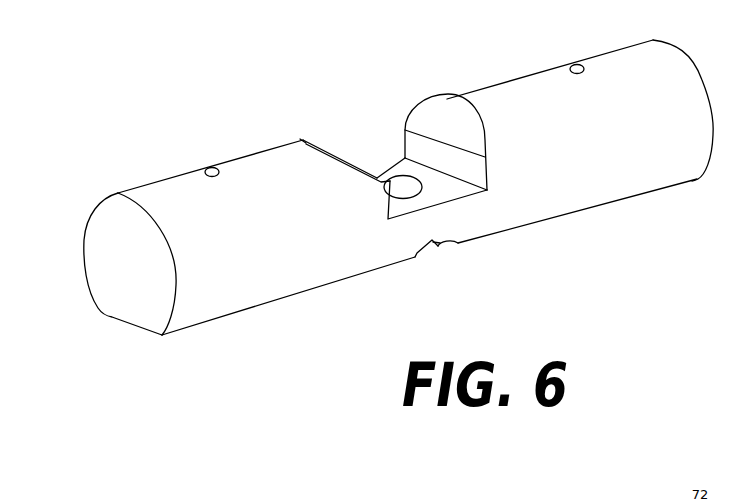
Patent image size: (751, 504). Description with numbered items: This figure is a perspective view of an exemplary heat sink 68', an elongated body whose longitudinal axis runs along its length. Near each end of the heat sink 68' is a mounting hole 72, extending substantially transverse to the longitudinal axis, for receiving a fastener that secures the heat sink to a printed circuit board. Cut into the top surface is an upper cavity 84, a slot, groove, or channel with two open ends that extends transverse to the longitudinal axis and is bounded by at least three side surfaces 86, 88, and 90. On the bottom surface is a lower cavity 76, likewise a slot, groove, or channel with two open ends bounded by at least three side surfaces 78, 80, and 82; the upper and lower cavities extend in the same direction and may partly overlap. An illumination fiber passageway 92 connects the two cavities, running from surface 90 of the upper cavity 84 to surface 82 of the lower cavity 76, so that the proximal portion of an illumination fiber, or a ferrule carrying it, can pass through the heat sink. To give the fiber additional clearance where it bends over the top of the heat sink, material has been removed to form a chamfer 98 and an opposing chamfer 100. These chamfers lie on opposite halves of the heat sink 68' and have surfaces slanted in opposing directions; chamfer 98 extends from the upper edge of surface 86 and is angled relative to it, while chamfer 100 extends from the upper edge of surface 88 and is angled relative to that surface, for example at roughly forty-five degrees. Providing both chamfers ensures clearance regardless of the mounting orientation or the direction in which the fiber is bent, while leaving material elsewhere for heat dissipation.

The mounting holes 72 is at (577, 65).
The heat sink 68' is at (268, 114).
The chamfer 98 is at (335, 155).
The upper cavity 84 is at (376, 146).
The chamfer 100 is at (432, 116).
The side surface 88 is at (477, 170).
The side surface 90 is at (487, 190).
The side surface 86 is at (389, 216).
The illumination fiber passageway 92 is at (397, 187).
The side surface 78 is at (414, 258).
The side surface 82 is at (443, 248).
The side surface 80 is at (465, 244).
The lower cavity 76 is at (430, 274).